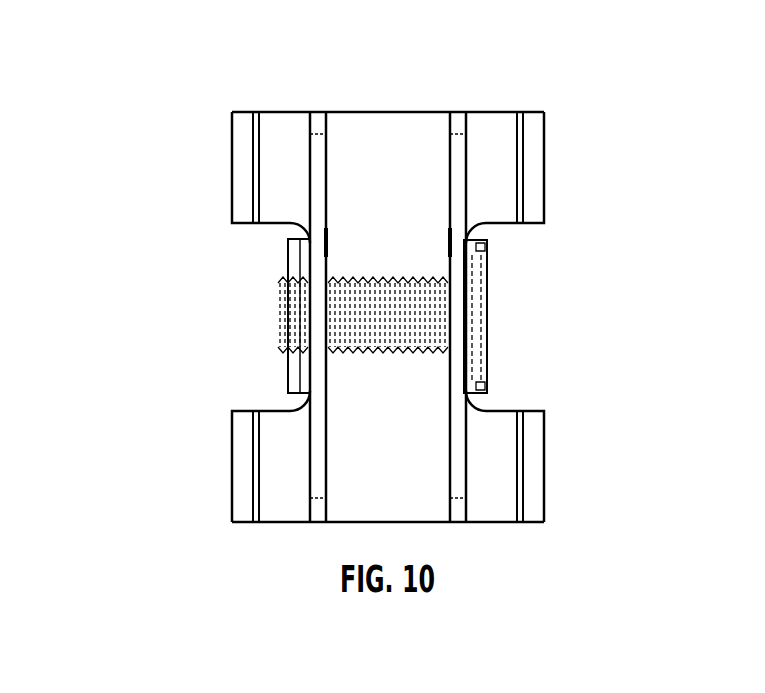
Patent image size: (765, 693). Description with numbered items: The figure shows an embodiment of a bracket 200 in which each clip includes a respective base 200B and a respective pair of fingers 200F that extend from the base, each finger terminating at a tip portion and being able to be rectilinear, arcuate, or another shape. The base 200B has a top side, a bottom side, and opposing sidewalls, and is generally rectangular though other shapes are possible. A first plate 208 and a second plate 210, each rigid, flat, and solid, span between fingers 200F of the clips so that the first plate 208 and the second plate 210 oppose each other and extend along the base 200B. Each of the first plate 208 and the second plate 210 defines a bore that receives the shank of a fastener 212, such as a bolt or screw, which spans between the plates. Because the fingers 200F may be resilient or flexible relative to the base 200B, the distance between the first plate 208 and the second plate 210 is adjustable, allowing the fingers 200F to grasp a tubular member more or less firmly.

The bracket 200 is at (166, 56).
The base 200B is at (406, 163).
The pair of fingers 200F is at (268, 160).
The first plate 208 is at (459, 447).
The second plate 210 is at (318, 422).
The fastener 212 is at (486, 330).